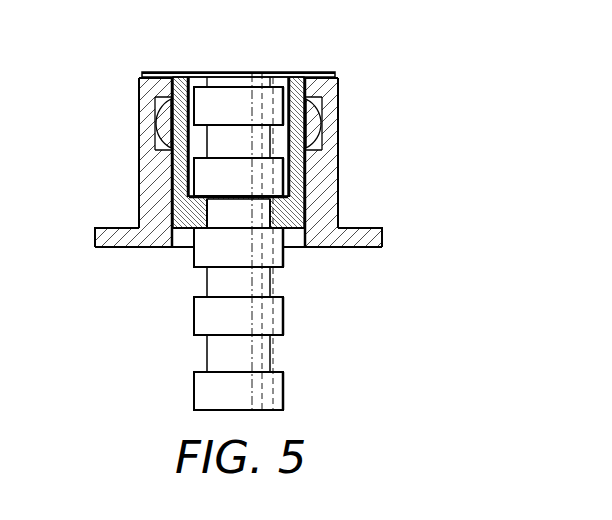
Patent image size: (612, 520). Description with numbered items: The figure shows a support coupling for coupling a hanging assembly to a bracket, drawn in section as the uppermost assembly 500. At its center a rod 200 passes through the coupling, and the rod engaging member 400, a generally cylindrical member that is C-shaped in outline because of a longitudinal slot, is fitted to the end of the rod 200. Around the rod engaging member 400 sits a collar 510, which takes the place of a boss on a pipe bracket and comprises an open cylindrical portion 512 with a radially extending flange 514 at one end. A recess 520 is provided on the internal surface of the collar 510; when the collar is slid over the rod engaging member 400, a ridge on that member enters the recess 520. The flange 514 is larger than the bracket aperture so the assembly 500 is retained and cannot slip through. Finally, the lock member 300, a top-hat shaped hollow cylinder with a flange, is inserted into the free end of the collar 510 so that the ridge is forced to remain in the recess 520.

The support coupling assembly 500 is at (121, 99).
The collar 510 is at (140, 182).
The open cylindrical portion 512 is at (338, 135).
The radially extending flange 514 is at (368, 248).
The recess 520 is at (157, 139).
The rod engaging member 400 is at (306, 182).
The lock member 300 is at (327, 69).
The rod 200 is at (293, 333).